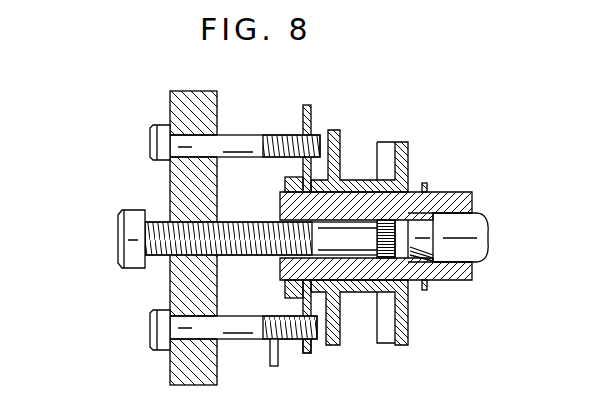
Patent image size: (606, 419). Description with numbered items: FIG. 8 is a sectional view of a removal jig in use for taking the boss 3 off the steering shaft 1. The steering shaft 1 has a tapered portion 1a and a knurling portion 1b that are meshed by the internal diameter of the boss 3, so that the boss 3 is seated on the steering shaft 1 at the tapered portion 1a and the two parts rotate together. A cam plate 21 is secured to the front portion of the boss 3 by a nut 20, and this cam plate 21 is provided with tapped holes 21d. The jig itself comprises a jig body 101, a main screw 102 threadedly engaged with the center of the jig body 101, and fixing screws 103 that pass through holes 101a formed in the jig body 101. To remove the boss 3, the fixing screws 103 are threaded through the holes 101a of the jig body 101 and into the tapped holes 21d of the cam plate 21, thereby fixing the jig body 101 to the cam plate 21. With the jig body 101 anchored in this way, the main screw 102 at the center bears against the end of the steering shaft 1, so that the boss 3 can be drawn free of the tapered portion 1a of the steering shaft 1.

The steering shaft 1 is at (467, 230).
The tapered portion 1a is at (427, 225).
The knurling portion 1b is at (390, 217).
The boss 3 is at (358, 198).
The nut 20 is at (285, 291).
The cam plate 21 is at (312, 308).
The tapped holes 21d is at (310, 355).
The jig body 101 is at (208, 103).
The holes 101a is at (212, 138).
The main screw 102 is at (126, 236).
The fixing screws 103 is at (158, 142).